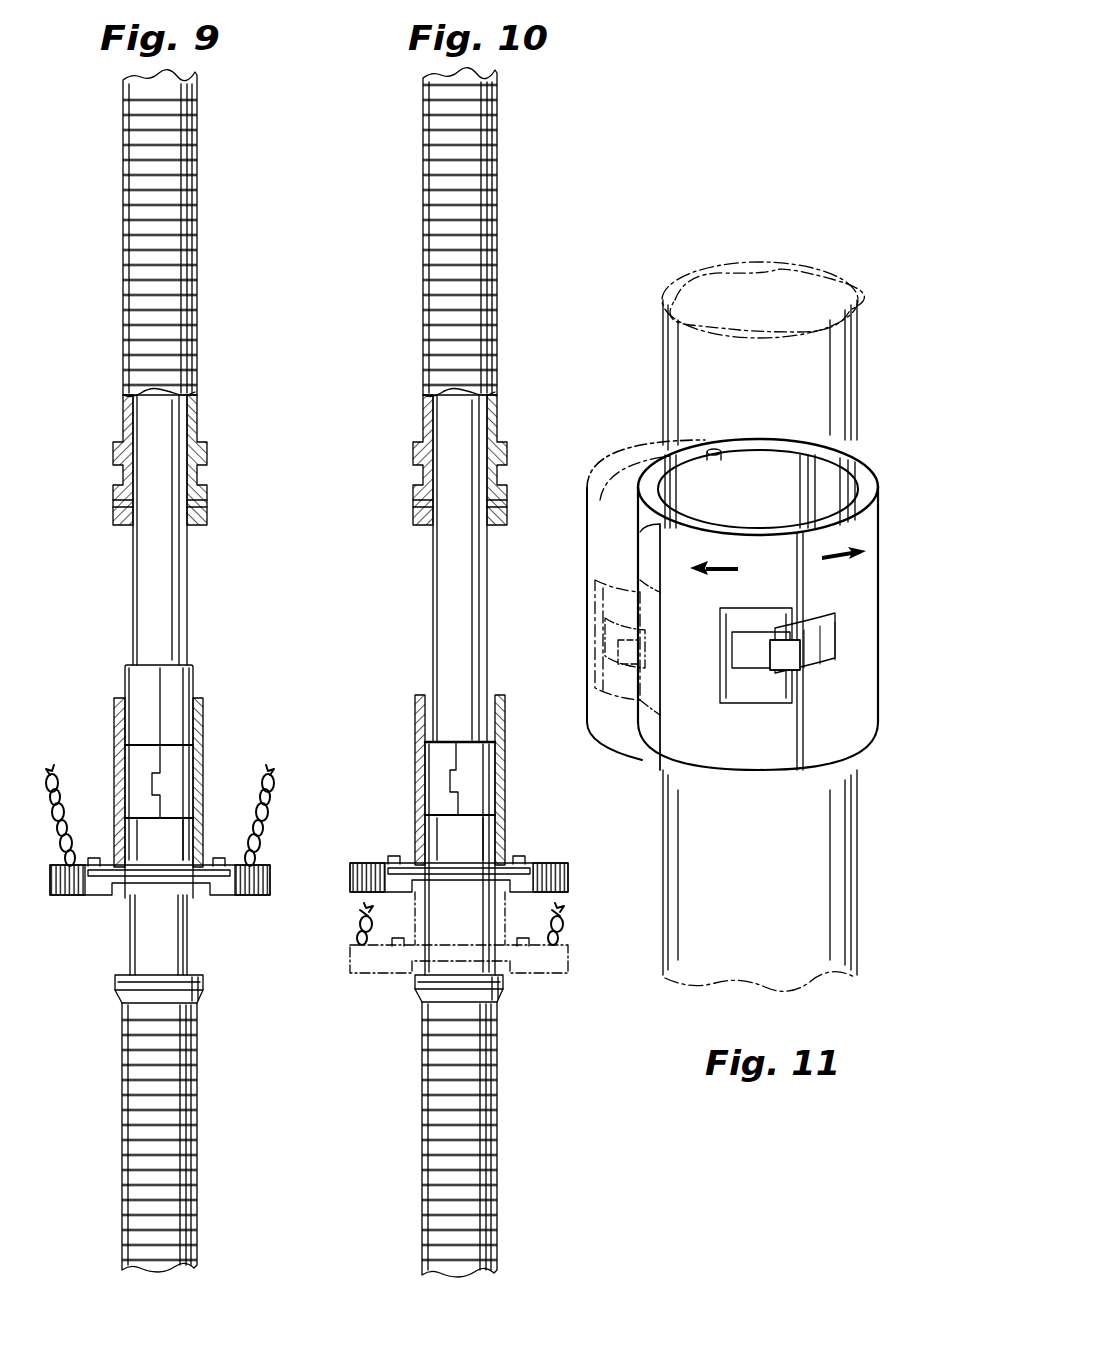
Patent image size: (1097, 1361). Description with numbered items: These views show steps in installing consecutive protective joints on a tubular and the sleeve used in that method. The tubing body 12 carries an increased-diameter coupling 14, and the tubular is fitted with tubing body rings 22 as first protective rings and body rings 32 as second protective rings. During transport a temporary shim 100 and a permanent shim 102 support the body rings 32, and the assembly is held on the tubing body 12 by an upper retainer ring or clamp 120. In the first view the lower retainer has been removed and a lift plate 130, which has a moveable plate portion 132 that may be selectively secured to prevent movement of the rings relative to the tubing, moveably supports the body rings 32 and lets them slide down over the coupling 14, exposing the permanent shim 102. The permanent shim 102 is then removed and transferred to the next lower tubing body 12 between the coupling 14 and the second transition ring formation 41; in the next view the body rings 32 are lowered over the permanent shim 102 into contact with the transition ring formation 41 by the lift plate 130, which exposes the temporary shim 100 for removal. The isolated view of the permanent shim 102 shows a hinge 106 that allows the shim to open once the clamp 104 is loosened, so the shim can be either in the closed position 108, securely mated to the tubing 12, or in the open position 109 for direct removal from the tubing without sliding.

In FIG. 9, the tubing body 12 is at (178, 604).
In FIG. 10, the tubing body 12 is at (445, 640).
In FIG. 11, the tubing body 12 is at (850, 378).
In FIG. 9, the coupling 14 is at (165, 848).
In FIG. 10, the coupling 14 is at (437, 834).
In FIG. 9, the tubing body rings 22 is at (124, 1092).
In FIG. 10, the tubing body rings 22 is at (426, 1100).
In FIG. 9, the body rings 32 is at (114, 750).
In FIG. 9, the second transition ring formation 41 is at (115, 992).
In FIG. 10, the second transition ring formation 41 is at (505, 1000).
In FIG. 9, the temporary shim 100 is at (185, 765).
In FIG. 10, the temporary shim 100 is at (433, 742).
In FIG. 9, the permanent shim 102 is at (195, 682).
In FIG. 10, the permanent shim 102 is at (440, 907).
In FIG. 11, the permanent shim 102 is at (781, 604).
In FIG. 11, the clamp 104 is at (838, 650).
In FIG. 11, the hinge 106 is at (708, 453).
In FIG. 11, the closed position 108 is at (872, 523).
In FIG. 11, the open position 109 is at (648, 561).
In FIG. 9, the upper retainer ring or clamp 120 is at (207, 496).
In FIG. 10, the upper retainer ring or clamp 120 is at (412, 486).
In FIG. 9, the lift plate 130 is at (52, 897).
In FIG. 10, the lift plate 130 is at (570, 891).
In FIG. 9, the moveable plate portion 132 is at (216, 876).
In FIG. 10, the moveable plate portion 132 is at (510, 866).